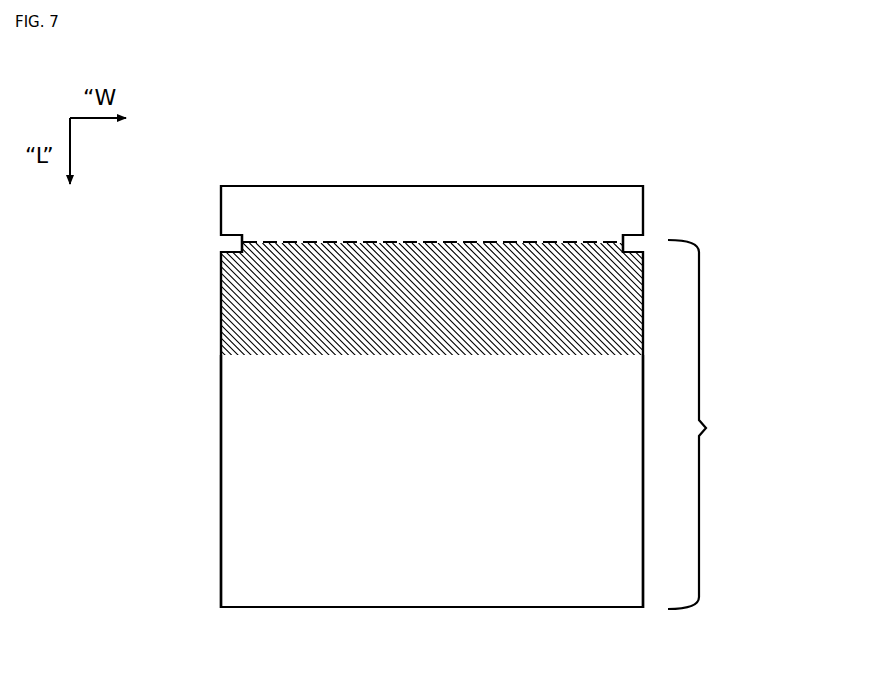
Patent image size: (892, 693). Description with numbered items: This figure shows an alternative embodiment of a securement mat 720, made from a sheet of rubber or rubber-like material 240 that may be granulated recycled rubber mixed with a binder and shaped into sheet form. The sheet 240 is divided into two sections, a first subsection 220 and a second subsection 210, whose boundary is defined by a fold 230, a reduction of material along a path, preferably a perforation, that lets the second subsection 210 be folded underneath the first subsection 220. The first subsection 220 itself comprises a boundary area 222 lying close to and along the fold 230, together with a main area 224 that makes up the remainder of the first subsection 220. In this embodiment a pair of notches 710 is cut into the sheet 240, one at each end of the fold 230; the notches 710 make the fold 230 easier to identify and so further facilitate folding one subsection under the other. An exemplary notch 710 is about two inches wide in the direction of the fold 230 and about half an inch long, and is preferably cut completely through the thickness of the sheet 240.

The second subsection 210 is at (495, 212).
The first subsection 220 is at (706, 428).
The boundary area 222 is at (258, 298).
The main area 224 is at (265, 473).
The fold 230 is at (370, 242).
The sheet of rubber material 240 is at (453, 505).
The notch 710 is at (215, 240).
The securement mat 720 is at (742, 120).